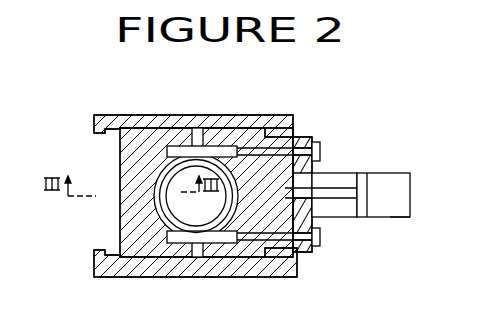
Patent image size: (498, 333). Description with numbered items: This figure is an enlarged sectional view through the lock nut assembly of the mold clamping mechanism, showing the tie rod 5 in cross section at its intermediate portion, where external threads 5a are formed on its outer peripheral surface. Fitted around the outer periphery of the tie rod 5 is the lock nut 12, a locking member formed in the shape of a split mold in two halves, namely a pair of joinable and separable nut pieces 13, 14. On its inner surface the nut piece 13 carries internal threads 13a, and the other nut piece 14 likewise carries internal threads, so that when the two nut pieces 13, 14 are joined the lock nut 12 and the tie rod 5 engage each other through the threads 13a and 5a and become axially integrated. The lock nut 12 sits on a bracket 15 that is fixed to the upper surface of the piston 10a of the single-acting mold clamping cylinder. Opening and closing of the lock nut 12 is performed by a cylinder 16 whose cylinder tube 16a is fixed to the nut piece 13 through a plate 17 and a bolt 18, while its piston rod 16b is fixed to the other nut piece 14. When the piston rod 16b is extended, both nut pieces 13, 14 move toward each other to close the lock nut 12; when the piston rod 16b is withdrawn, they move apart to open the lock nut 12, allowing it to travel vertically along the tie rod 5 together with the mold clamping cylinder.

The tie rod 5 is at (229, 233).
The external threads 5a is at (177, 235).
The piston 10a is at (207, 212).
The lock nut 12 is at (200, 126).
The nut piece 13 is at (143, 150).
The internal threads 13a is at (162, 203).
The nut piece 14 is at (262, 124).
The bracket 15 is at (152, 274).
The cylinder 16 is at (406, 171).
The cylinder tube 16a is at (395, 218).
The piston rod 16b is at (333, 187).
The plate 17 is at (311, 137).
The bolt 18 is at (321, 150).